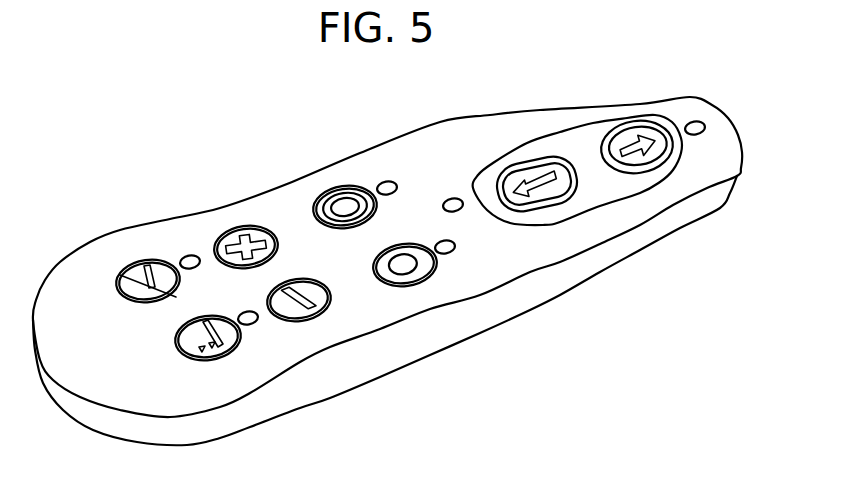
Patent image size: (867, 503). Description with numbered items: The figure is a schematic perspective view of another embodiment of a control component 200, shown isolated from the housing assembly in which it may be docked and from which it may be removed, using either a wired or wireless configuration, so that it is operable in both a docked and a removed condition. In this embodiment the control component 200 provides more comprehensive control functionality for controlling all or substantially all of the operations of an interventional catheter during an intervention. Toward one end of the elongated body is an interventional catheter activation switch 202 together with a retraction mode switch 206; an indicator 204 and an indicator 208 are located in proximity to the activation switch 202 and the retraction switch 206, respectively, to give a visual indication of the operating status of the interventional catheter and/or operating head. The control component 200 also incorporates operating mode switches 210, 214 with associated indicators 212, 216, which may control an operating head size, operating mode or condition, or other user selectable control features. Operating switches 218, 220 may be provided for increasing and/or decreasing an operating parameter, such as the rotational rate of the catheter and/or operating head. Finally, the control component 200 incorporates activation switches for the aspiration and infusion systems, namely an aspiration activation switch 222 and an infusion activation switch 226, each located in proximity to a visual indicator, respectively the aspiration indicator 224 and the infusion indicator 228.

The control component 200 is at (236, 93).
The interventional catheter activation switch 202 is at (555, 193).
The indicator 204 is at (453, 200).
The retraction mode switch 206 is at (649, 157).
The indicator 208 is at (698, 127).
The operating mode switch 210 is at (347, 207).
The indicator 212 is at (384, 184).
The operating mode switch 214 is at (406, 265).
The indicator 216 is at (448, 248).
The operating switch 218 is at (244, 245).
The operating switch 220 is at (300, 302).
The aspiration activation switch 222 is at (147, 279).
The aspiration indicator 224 is at (188, 258).
The infusion activation switch 226 is at (215, 345).
The infusion indicator 228 is at (255, 323).